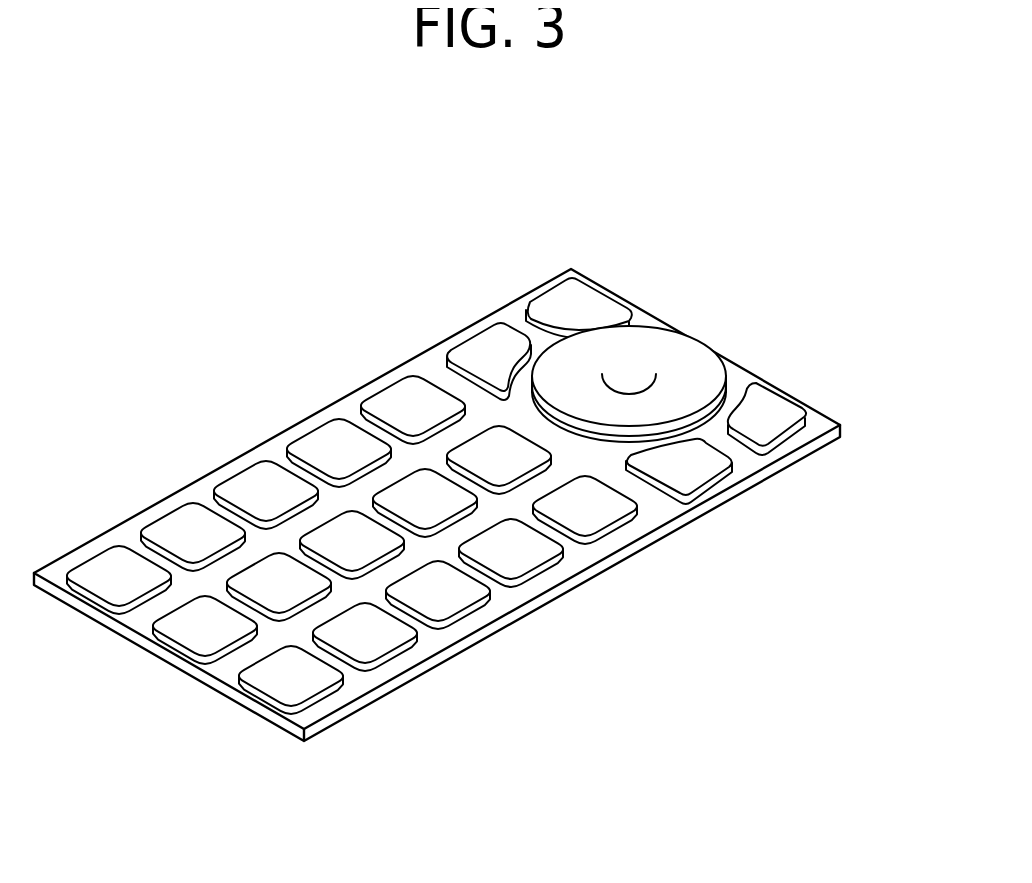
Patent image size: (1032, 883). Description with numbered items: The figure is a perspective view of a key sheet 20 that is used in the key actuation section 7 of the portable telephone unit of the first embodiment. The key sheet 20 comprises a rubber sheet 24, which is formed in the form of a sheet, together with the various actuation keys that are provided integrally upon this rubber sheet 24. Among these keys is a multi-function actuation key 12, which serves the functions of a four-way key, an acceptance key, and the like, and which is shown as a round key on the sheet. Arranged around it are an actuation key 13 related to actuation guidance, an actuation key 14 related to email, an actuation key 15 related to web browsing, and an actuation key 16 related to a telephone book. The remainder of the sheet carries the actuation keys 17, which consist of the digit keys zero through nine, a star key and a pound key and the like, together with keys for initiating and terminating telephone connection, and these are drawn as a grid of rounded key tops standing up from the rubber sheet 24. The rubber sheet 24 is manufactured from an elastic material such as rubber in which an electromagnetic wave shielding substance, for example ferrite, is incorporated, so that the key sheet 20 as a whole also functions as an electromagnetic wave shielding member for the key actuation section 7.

The key actuation section 7 is at (272, 437).
The multi-function actuation key 12 is at (685, 375).
The actuation key related to actuation guidance 13 is at (782, 417).
The actuation key related to email 14 is at (683, 465).
The actuation key related to web browsing 15 is at (543, 302).
The actuation key related to a telephone book 16 is at (472, 347).
The actuation keys 17 is at (333, 540).
The key sheet 20 is at (620, 635).
The rubber sheet 24 is at (373, 697).